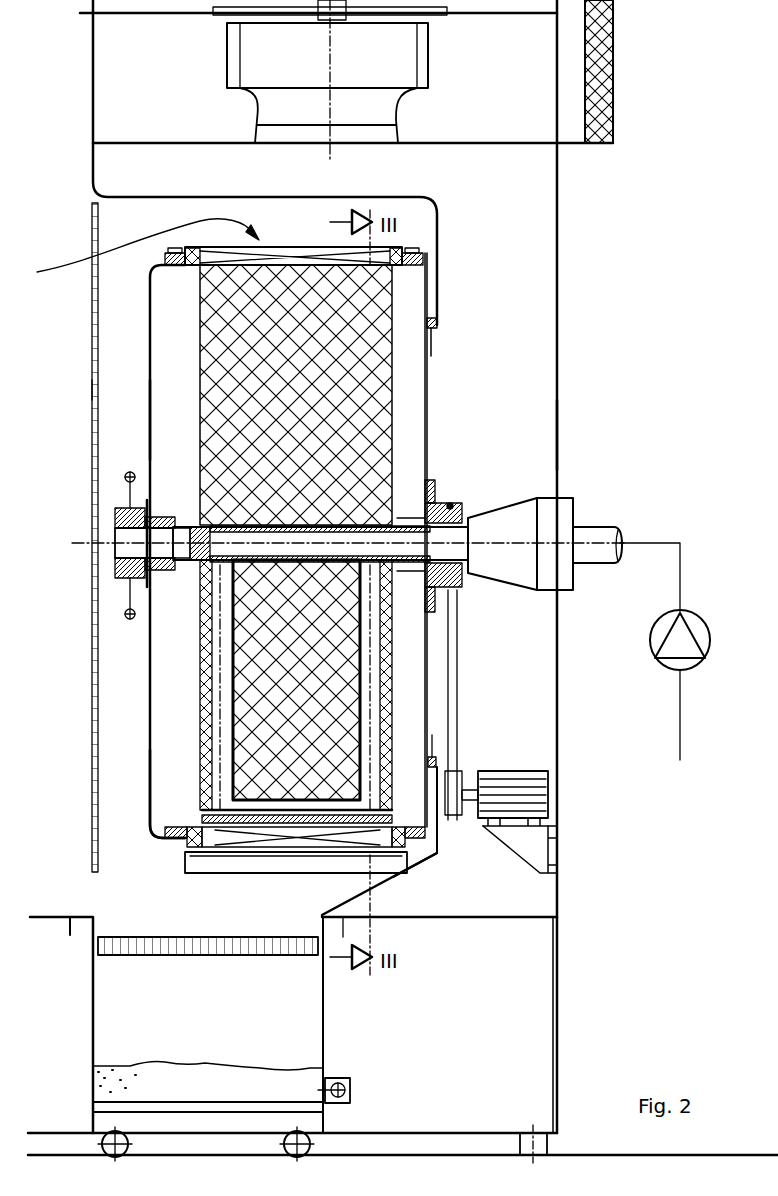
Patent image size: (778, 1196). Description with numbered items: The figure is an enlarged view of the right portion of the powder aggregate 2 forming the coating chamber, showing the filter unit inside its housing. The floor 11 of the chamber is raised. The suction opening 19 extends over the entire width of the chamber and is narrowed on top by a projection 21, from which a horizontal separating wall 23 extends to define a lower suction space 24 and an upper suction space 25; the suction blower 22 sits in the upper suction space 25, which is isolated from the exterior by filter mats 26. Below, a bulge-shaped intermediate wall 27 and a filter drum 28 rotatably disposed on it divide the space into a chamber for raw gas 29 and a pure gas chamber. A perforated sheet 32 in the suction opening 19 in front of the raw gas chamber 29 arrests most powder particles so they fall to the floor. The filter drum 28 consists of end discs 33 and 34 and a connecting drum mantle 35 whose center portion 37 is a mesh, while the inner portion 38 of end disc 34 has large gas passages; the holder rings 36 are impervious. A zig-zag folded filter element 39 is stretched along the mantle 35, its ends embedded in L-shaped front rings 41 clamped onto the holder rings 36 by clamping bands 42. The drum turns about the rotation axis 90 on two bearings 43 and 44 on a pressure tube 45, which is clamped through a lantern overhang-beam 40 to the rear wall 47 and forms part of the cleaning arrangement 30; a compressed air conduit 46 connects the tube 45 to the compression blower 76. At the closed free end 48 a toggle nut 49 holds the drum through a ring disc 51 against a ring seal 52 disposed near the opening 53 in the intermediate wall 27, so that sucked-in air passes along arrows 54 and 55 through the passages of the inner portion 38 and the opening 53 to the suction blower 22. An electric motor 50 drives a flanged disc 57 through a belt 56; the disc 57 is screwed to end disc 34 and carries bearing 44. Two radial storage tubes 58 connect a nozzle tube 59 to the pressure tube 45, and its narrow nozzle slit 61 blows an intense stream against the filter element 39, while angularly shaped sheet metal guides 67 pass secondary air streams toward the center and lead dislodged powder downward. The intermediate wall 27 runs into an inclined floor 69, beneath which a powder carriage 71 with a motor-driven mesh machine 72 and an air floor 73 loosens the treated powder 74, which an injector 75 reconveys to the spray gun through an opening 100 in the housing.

The machine frame 2 is at (563, 361).
The floor 11 is at (62, 893).
The suction opening 19 is at (110, 231).
The projection 21 is at (93, 150).
The suction blower 22 is at (388, 64).
The horizontal separating wall 23 is at (437, 143).
The lower suction space 24 is at (531, 192).
The upper suction space 25 is at (512, 87).
The filter mats 26 is at (613, 82).
The intermediate wall 27 is at (440, 240).
The filter drum 28 is at (135, 306).
The chamber for raw gas 29 is at (308, 228).
The cleaning arrangement 30 is at (190, 782).
The perforated sheet 32 is at (92, 385).
The end disc 33 is at (152, 420).
The end disc 34 is at (425, 335).
The drum mantle 35 is at (193, 282).
The holder rings 36 is at (192, 275).
The center portion of drum mantle 37 is at (203, 373).
The inner portion of end disc 38 is at (427, 440).
The filter element 39 is at (232, 255).
The lantern overhang-beam 40 is at (490, 515).
The front rings 41 is at (190, 217).
The clamping bands 42 is at (180, 253).
The bearing 43 is at (156, 508).
The bearing 44 is at (423, 513).
The pressure tube 45 is at (185, 570).
The compressed air conduit 46 is at (600, 563).
The rear wall 47 is at (557, 430).
The closed free end 48 is at (116, 524).
The toggle nut 49 is at (125, 617).
The electric motor 50 is at (490, 772).
The ring disc 51 is at (134, 470).
The ring seal 52 is at (438, 310).
The opening 53 is at (433, 355).
The arrow 54 is at (392, 392).
The arrow 55 is at (497, 240).
The belt 56 is at (455, 730).
The flanged disc 57 is at (427, 596).
The storage tubes 58 is at (203, 628).
The nozzle tube 59 is at (202, 812).
The nozzle slit 61 is at (385, 815).
The sheet metal guides 67 is at (215, 862).
The inclined floor 69 is at (390, 880).
The powder carriage 71 is at (259, 1011).
The mesh machine 72 is at (125, 950).
The air floor 73 is at (245, 1105).
The treated powder 74 is at (165, 1075).
The injector 75 is at (348, 1086).
The compression blower 76 is at (650, 640).
The rotation axis 90 is at (80, 543).
The opening 100 is at (557, 990).